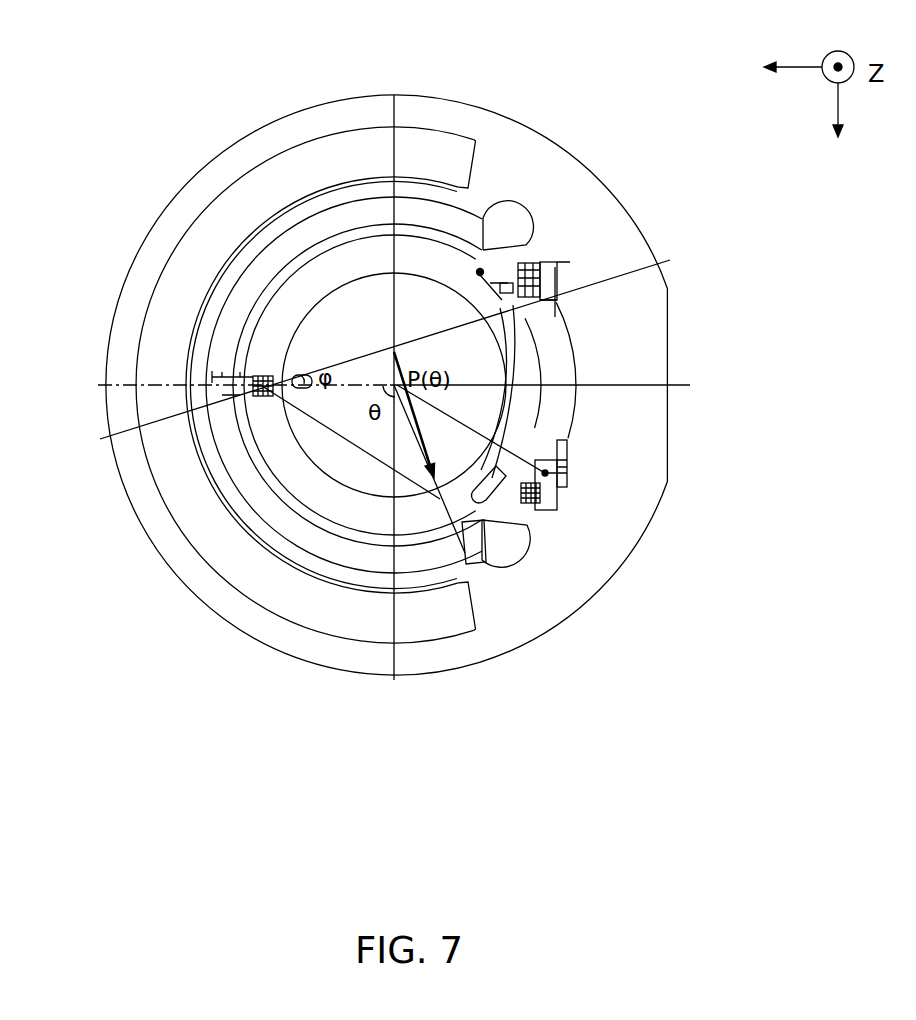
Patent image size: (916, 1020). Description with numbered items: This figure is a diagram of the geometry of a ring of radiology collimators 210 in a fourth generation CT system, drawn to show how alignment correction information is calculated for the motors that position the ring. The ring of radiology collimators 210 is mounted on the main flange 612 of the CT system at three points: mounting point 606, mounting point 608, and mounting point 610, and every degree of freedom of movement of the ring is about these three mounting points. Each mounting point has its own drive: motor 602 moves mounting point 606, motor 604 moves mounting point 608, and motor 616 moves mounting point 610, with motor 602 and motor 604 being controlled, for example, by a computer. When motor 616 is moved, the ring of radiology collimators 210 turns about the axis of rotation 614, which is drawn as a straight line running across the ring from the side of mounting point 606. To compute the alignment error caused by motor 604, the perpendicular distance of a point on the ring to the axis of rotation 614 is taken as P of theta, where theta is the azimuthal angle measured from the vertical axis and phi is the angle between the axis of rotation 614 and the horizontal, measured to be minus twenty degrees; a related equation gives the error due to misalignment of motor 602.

The ring of radiology collimators 210 is at (542, 407).
The motor 602 is at (257, 395).
The motor 604 is at (555, 262).
The mounting point 606 is at (212, 380).
The mounting point 608 is at (488, 273).
The mounting point 610 is at (490, 488).
The main flange 612 is at (542, 142).
The axis of rotation 614 is at (660, 263).
The motor 616 is at (552, 488).